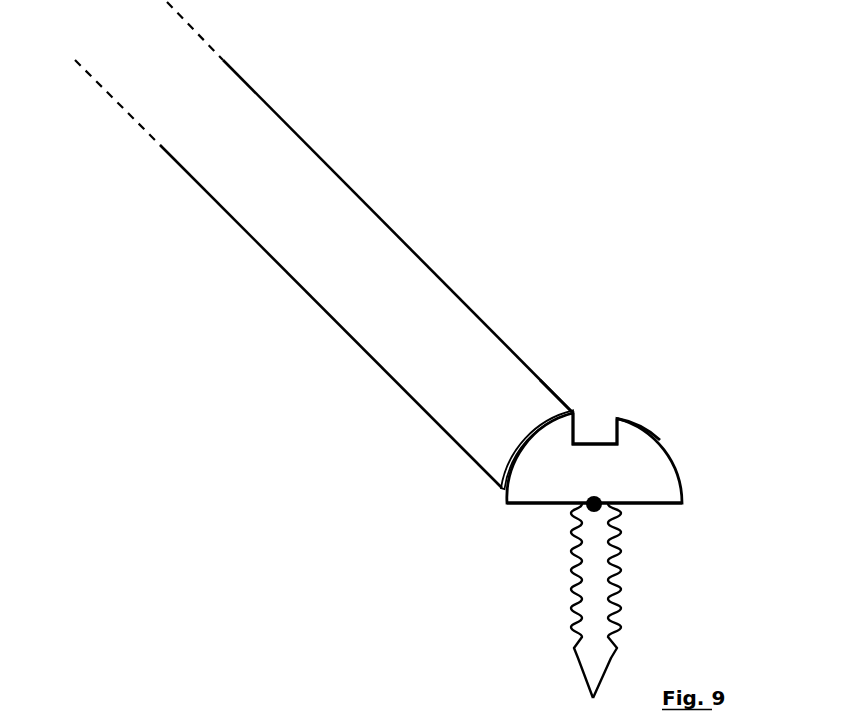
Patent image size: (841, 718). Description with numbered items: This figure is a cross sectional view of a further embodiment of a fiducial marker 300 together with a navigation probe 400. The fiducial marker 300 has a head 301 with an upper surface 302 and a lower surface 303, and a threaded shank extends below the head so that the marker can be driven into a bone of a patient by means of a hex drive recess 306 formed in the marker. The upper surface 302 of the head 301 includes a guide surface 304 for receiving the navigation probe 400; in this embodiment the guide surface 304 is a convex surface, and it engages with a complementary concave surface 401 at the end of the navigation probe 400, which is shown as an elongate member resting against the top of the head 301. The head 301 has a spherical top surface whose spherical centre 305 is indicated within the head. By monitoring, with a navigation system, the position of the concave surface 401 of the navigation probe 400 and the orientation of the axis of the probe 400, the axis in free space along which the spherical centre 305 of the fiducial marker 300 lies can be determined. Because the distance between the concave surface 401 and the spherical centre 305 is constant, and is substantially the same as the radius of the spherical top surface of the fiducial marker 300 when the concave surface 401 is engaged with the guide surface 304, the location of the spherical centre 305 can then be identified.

The fiducial marker 300 is at (580, 514).
The head 301 is at (655, 483).
The upper surface 302 is at (620, 421).
The lower surface 303 is at (542, 503).
The guide surface 304 is at (503, 489).
The spherical centre 305 is at (613, 508).
The hex drive recess 306 is at (610, 438).
The navigation probe 400 is at (288, 284).
The concave surface 401 is at (558, 405).